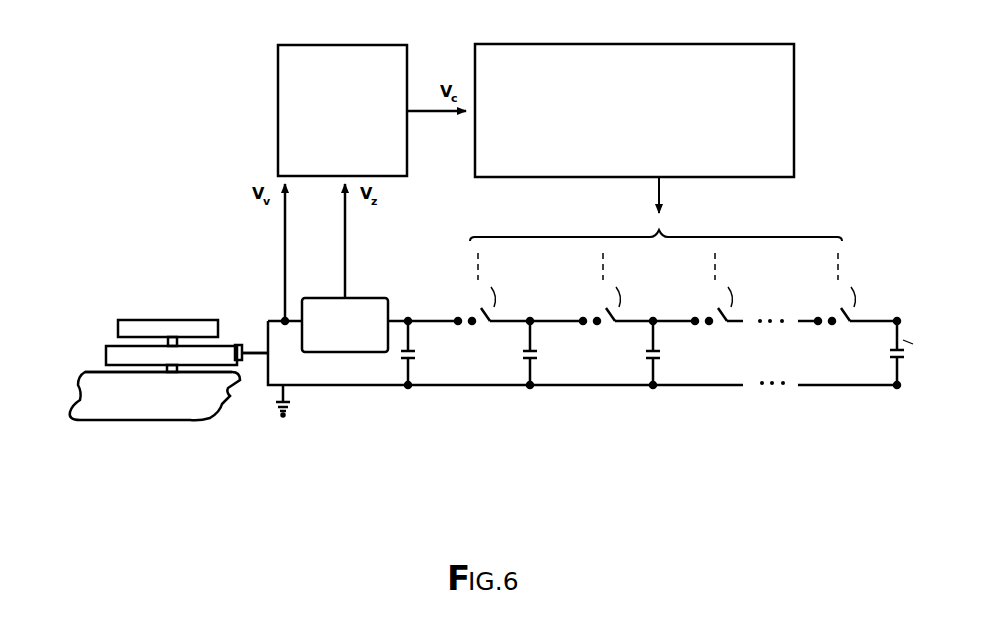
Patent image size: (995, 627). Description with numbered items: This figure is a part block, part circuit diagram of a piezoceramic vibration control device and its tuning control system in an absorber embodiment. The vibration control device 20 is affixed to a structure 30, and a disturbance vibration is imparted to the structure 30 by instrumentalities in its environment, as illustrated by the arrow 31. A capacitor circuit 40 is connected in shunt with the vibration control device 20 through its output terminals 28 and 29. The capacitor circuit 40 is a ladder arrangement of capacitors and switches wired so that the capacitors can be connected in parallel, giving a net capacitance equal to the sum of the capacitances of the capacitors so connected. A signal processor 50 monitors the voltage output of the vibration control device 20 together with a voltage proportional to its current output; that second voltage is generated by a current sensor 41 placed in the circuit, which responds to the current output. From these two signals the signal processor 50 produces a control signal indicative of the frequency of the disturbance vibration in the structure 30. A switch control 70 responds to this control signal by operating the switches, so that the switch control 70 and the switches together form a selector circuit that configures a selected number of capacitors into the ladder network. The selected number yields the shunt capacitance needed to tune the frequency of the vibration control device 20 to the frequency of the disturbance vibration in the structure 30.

The piezoceramic vibration control device 20 is at (107, 329).
The output terminal 28 is at (257, 337).
The output terminal 29 is at (253, 380).
The structure 30 is at (162, 410).
The arrow 31 is at (81, 365).
The capacitor circuit 40 is at (656, 406).
The current sensor 41 is at (372, 298).
The signal processor 50 is at (271, 109).
The switch control 70 is at (802, 96).